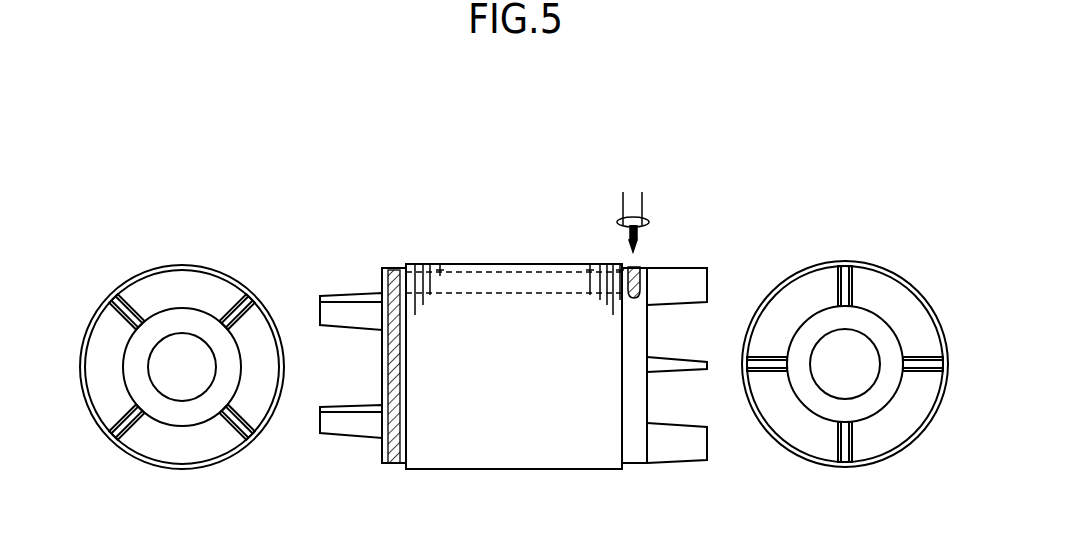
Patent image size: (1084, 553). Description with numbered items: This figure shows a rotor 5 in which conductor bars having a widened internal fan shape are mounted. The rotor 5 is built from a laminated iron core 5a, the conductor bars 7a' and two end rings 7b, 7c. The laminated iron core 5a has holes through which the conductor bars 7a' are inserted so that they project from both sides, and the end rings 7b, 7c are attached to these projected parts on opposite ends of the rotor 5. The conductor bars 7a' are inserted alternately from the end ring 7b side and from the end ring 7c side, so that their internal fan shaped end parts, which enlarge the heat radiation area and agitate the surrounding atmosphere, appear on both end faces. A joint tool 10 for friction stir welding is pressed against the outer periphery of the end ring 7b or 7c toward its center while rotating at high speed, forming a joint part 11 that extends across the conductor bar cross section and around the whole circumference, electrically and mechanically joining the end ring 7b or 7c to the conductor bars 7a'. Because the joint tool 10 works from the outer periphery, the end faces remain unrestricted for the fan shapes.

The rotor 5 is at (505, 450).
The laminated iron core 5a is at (601, 280).
The conductor bars with internal fan shape 7a' is at (526, 326).
The end ring 7b is at (635, 455).
The end ring 7c is at (178, 450).
The joint tool 10 is at (645, 203).
The joint part 11 is at (391, 270).